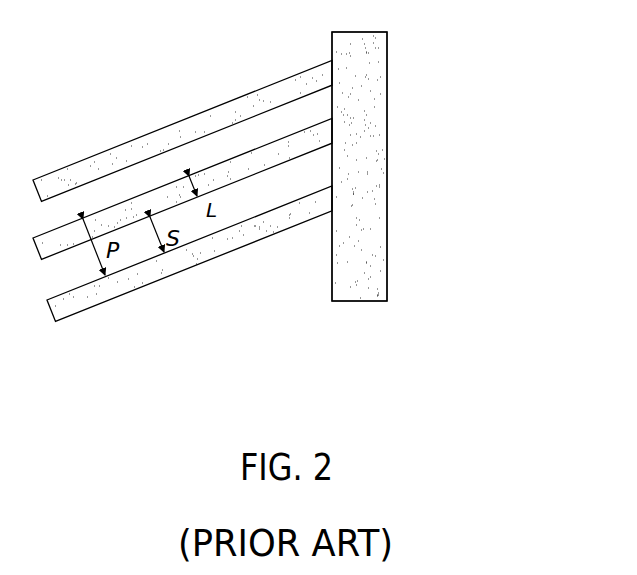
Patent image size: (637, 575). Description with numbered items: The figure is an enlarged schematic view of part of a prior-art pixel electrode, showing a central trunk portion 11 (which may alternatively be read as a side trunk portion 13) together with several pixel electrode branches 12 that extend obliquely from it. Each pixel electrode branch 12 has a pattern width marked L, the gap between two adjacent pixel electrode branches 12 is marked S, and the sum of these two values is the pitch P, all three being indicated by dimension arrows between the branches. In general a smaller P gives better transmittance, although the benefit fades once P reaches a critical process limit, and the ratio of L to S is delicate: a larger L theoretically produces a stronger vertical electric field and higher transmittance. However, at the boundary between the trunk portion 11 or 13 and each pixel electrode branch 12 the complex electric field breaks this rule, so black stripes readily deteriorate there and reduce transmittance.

The central trunk portion 11 is at (362, 118).
The pixel electrode branch 12 is at (227, 101).
The side trunk portion 13 is at (471, 166).